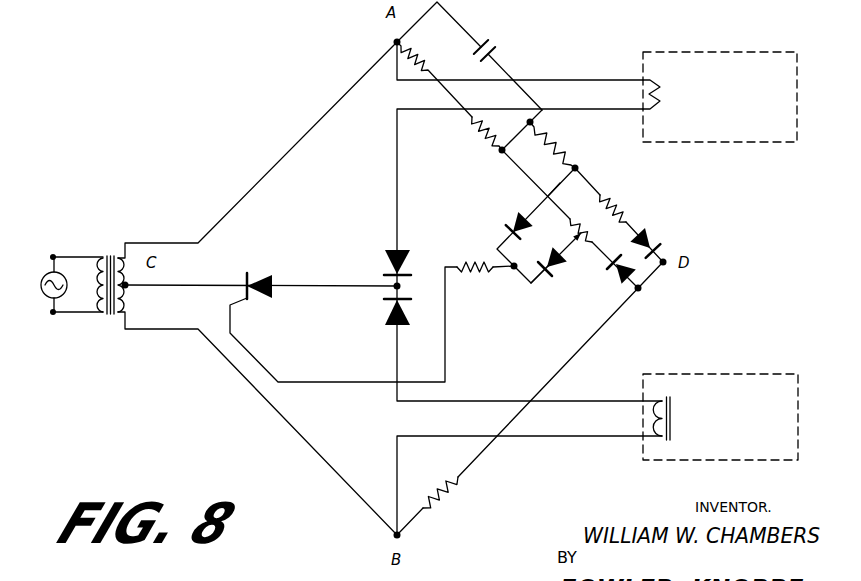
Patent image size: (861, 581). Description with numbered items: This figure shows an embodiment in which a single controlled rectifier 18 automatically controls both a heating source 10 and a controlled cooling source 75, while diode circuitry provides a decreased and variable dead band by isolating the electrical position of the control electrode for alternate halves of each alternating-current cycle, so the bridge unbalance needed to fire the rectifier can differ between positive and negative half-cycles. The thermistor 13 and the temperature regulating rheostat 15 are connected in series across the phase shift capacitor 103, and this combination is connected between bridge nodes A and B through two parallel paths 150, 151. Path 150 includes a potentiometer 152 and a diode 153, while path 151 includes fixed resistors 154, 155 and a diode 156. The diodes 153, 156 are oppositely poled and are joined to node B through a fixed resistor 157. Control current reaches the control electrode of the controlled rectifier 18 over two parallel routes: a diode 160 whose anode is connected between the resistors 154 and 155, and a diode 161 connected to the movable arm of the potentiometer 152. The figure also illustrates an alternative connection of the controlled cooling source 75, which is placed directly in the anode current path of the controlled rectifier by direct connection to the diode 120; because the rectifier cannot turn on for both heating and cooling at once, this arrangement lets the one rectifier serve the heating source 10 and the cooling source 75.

The controlled heating source 10 is at (702, 52).
The thermistor 13 is at (429, 65).
The temperature regulating rheostat 15 is at (477, 127).
The phase shift capacitor 103 is at (503, 42).
The fixed resistor 154 is at (566, 143).
The parallel path 150 is at (588, 186).
The parallel path 151 is at (583, 194).
The fixed resistor 155 is at (613, 206).
The diode 156 is at (657, 240).
The diode 160 is at (517, 214).
The potentiometer 152 is at (556, 269).
The diode 161 is at (566, 270).
The diode 153 is at (611, 272).
The controlled rectifier 18 is at (268, 270).
The diode 120 is at (385, 314).
The fixed resistor 157 is at (457, 486).
The controlled cooling source 75 is at (703, 374).